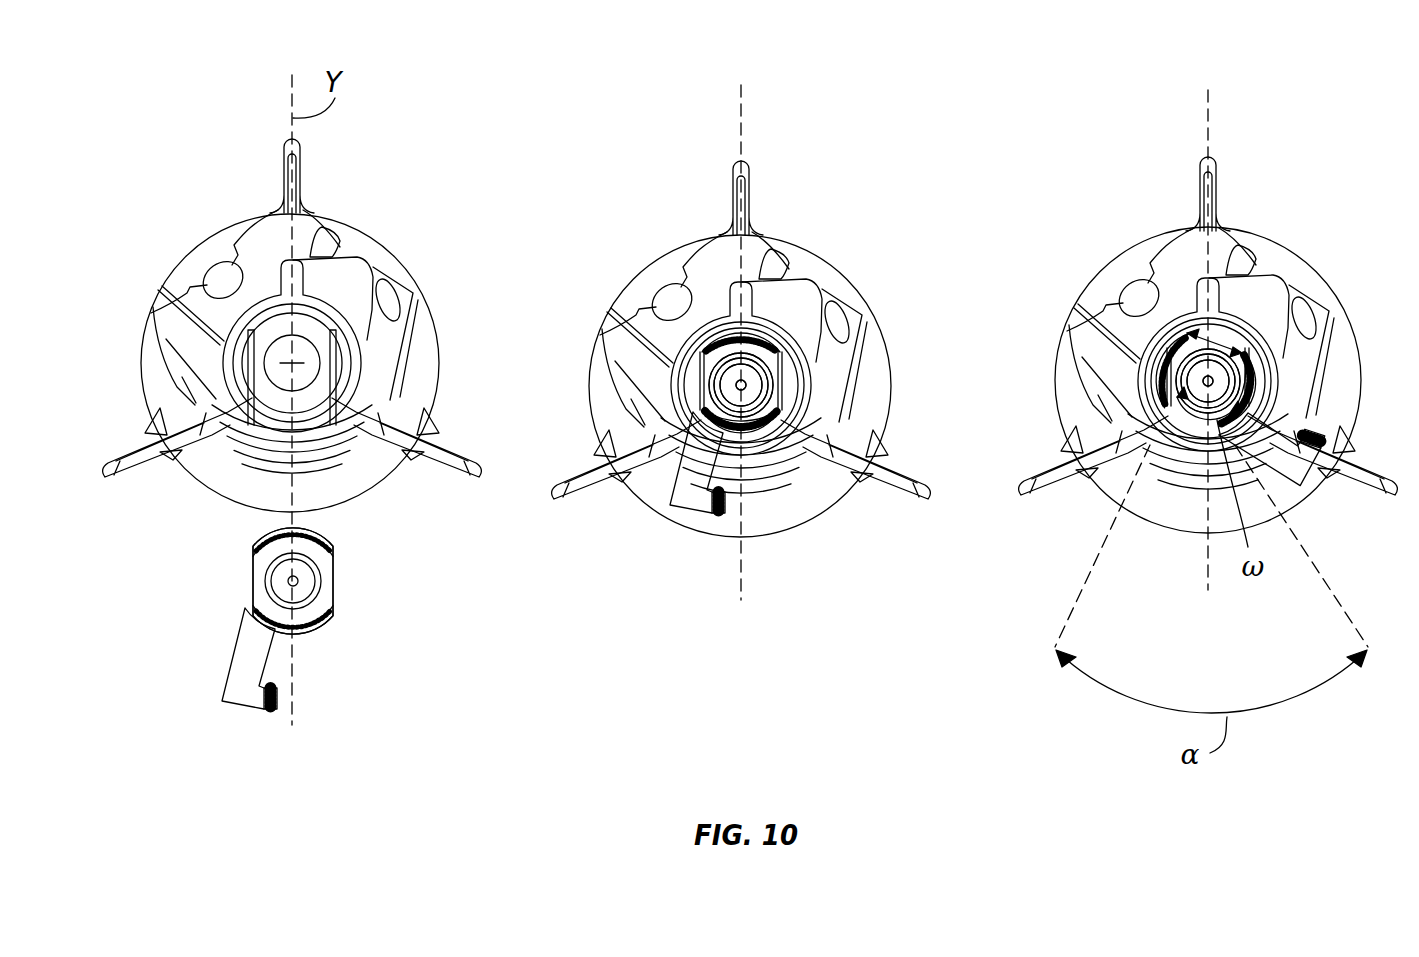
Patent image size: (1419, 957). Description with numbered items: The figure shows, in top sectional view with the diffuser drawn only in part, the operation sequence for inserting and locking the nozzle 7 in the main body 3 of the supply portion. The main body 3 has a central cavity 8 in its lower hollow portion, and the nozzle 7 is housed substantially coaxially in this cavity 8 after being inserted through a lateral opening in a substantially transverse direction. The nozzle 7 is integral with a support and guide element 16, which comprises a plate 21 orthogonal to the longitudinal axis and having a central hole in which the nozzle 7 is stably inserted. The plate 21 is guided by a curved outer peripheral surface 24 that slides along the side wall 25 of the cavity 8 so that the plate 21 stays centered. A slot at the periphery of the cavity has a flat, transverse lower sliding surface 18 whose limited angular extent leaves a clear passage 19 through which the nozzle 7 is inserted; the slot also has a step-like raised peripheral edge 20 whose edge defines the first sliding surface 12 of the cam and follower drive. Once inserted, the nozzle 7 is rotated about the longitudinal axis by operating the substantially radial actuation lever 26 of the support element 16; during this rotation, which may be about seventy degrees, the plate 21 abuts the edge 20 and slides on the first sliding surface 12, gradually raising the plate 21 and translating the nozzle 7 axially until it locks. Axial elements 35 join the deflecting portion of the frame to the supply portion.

The main body 3 is at (810, 368).
The nozzle 7 is at (306, 583).
The central cavity 8 is at (237, 356).
The first sliding surface 12 is at (328, 362).
The support and guide element 16 is at (232, 632).
The lower sliding surface 18 is at (320, 330).
The clear passage 19 is at (320, 448).
The step-like raised peripheral edge 20 is at (368, 330).
The plate 21 is at (258, 586).
The curved outer peripheral surface 24 is at (272, 540).
The side wall 25 is at (787, 383).
The actuation lever 26 is at (247, 692).
The axial elements 35 is at (753, 198).